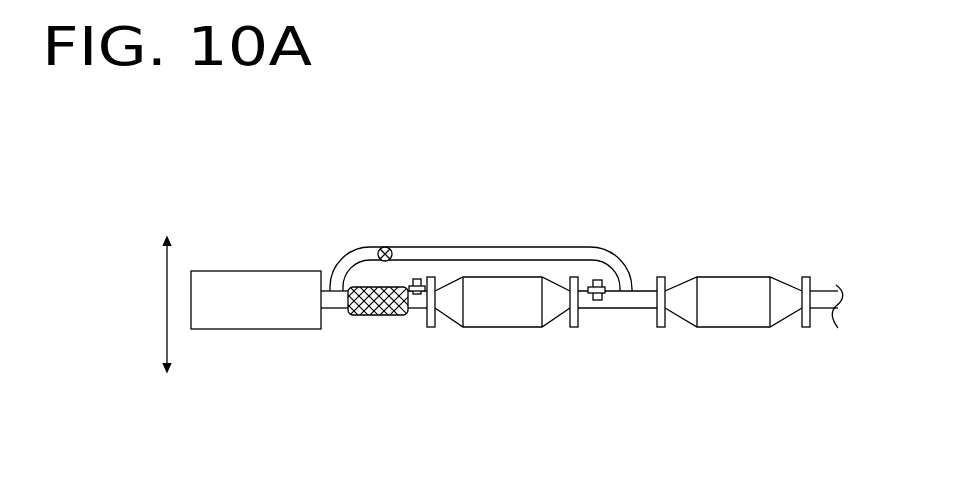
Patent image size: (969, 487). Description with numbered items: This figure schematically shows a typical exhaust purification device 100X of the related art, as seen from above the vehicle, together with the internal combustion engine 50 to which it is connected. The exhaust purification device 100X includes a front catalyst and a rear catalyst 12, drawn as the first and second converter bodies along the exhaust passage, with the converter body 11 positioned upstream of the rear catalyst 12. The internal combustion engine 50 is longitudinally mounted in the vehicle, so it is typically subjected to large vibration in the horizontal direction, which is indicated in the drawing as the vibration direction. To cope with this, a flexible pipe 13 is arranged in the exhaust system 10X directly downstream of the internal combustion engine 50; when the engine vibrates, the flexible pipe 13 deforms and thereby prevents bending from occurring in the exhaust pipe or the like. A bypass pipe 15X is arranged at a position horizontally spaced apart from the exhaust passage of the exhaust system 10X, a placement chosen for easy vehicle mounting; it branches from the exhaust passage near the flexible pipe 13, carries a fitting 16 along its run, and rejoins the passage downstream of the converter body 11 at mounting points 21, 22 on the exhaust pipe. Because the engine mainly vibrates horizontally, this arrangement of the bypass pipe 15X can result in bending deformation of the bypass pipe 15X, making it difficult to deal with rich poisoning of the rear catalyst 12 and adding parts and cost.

The exhaust system 10X is at (322, 181).
The internal combustion engine 50 is at (216, 270).
The flexible pipe 13 is at (377, 315).
The support bracket 21 is at (409, 279).
The support bracket 22 is at (597, 279).
The first catalytic converter 11 is at (500, 328).
The rear catalyst 12 is at (733, 328).
The bypass pipe 15X is at (483, 247).
The valve 16 is at (386, 247).
The exhaust purification device 100X is at (573, 316).